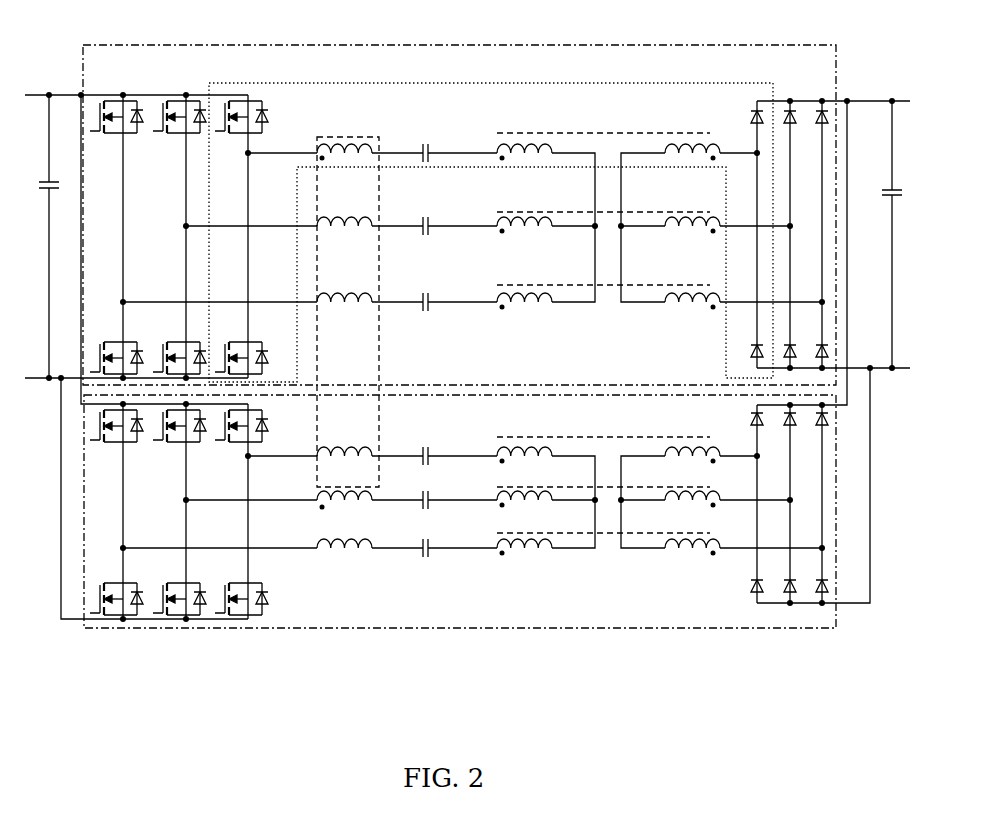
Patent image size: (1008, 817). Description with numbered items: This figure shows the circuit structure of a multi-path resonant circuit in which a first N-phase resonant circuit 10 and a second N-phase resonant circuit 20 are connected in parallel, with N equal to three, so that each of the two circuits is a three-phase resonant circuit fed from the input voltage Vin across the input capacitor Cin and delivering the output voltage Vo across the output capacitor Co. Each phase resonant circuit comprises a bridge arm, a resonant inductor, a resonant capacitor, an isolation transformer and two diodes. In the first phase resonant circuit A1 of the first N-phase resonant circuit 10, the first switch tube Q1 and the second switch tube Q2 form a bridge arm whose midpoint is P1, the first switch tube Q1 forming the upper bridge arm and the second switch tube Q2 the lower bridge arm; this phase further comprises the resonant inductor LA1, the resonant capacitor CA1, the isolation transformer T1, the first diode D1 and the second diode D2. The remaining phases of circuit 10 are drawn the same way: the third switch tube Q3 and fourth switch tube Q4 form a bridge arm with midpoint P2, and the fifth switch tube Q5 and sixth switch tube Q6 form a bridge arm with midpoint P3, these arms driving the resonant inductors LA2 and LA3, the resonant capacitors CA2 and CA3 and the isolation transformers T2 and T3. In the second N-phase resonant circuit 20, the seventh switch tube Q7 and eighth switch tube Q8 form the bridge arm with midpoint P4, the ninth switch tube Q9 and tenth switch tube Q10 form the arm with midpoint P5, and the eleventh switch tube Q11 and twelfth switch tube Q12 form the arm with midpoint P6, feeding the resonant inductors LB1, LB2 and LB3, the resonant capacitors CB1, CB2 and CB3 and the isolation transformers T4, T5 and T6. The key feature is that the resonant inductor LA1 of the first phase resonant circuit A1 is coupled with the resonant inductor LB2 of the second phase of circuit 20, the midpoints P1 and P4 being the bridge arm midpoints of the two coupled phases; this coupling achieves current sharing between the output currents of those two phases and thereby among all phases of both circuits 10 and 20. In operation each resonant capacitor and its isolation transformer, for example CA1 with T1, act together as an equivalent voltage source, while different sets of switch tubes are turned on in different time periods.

The first N-phase resonant circuit 10 is at (463, 45).
The second N-phase resonant circuit 20 is at (497, 628).
The first phase resonant circuit A1 is at (487, 83).
The input voltage Vin is at (136, 83).
The output voltage Vo is at (833, 89).
The input capacitor Cin is at (36, 236).
The output capacitor Co is at (879, 234).
The first switch tube Q1 is at (255, 113).
The second switch tube Q2 is at (253, 351).
The third switch tube Q3 is at (179, 126).
The fourth switch tube Q4 is at (179, 348).
The fifth switch tube Q5 is at (116, 126).
The sixth switch tube Q6 is at (116, 348).
The seventh switch tube Q7 is at (255, 424).
The switch Q8 is at (254, 595).
The ninth switch tube Q9 is at (179, 437).
The tenth switch tube Q10 is at (179, 591).
The eleventh switch tube Q11 is at (115, 437).
The twelfth switch tube Q12 is at (115, 591).
The bridge arm midpoint P1 is at (269, 154).
The bridge arm midpoint P2 is at (237, 224).
The bridge arm midpoint P3 is at (218, 293).
The bridge arm midpoint P4 is at (268, 459).
The bridge arm midpoint P5 is at (238, 501).
The bridge arm midpoint P6 is at (218, 540).
The resonant inductor LA1 is at (344, 139).
The resonant inductor LA2 is at (344, 211).
The resonant inductor LA3 is at (344, 287).
The resonant inductor LB1 is at (344, 442).
The resonant inductor LB2 is at (344, 489).
The resonant inductor LB3 is at (344, 534).
The resonant capacitor CA1 is at (444, 147).
The resonant capacitor CA2 is at (444, 219).
The resonant capacitor CA3 is at (444, 295).
The resonant capacitor CB1 is at (444, 449).
The resonant capacitor CB2 is at (444, 495).
The resonant capacitor CB3 is at (444, 543).
The isolation transformer T1 is at (608, 137).
The isolation transformer T2 is at (608, 213).
The isolation transformer T3 is at (608, 288).
The isolation transformer T4 is at (608, 440).
The isolation transformer T5 is at (608, 488).
The isolation transformer T6 is at (608, 536).
The first diode D1 is at (745, 117).
The second diode D2 is at (745, 352).